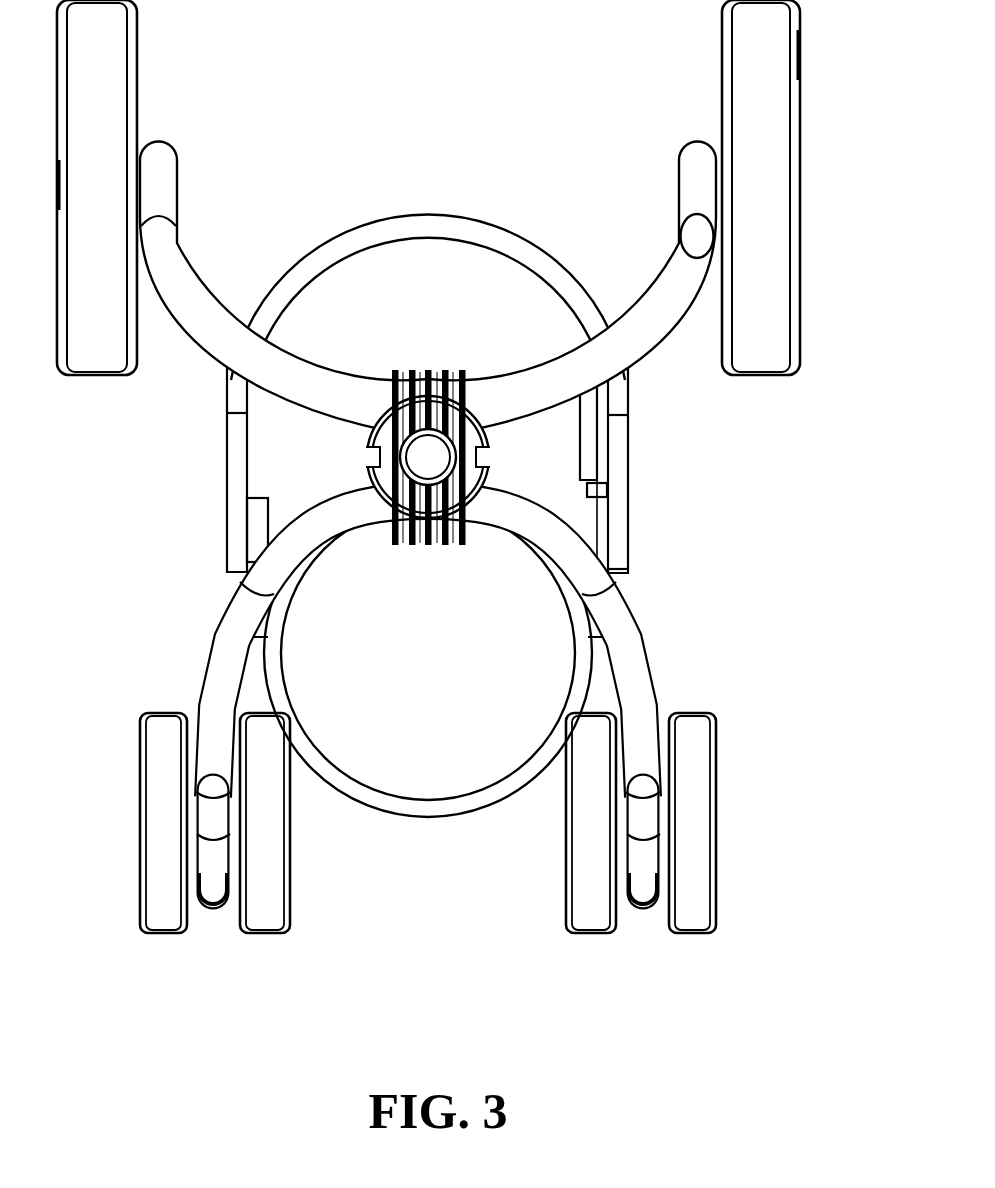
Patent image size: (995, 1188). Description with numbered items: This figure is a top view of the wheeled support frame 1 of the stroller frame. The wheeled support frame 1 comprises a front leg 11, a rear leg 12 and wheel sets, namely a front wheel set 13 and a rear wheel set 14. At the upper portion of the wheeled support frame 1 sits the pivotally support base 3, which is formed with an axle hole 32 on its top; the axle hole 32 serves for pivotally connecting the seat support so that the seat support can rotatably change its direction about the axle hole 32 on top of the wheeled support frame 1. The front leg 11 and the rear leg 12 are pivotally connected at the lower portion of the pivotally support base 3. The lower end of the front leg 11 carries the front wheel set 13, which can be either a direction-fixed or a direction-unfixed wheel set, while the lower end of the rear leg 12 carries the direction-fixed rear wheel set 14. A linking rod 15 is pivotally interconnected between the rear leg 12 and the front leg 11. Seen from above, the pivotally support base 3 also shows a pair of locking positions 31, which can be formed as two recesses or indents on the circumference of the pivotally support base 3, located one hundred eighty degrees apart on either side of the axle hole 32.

The wheeled support frame 1 is at (478, 466).
The pivotally support base 3 is at (423, 503).
The front leg 11 is at (400, 702).
The rear leg 12 is at (622, 357).
The front wheel set 13 is at (431, 777).
The rear wheel set 14 is at (760, 67).
The linking rod 15 is at (617, 502).
The locking positions 31 is at (423, 453).
The axle hole 32 is at (430, 453).